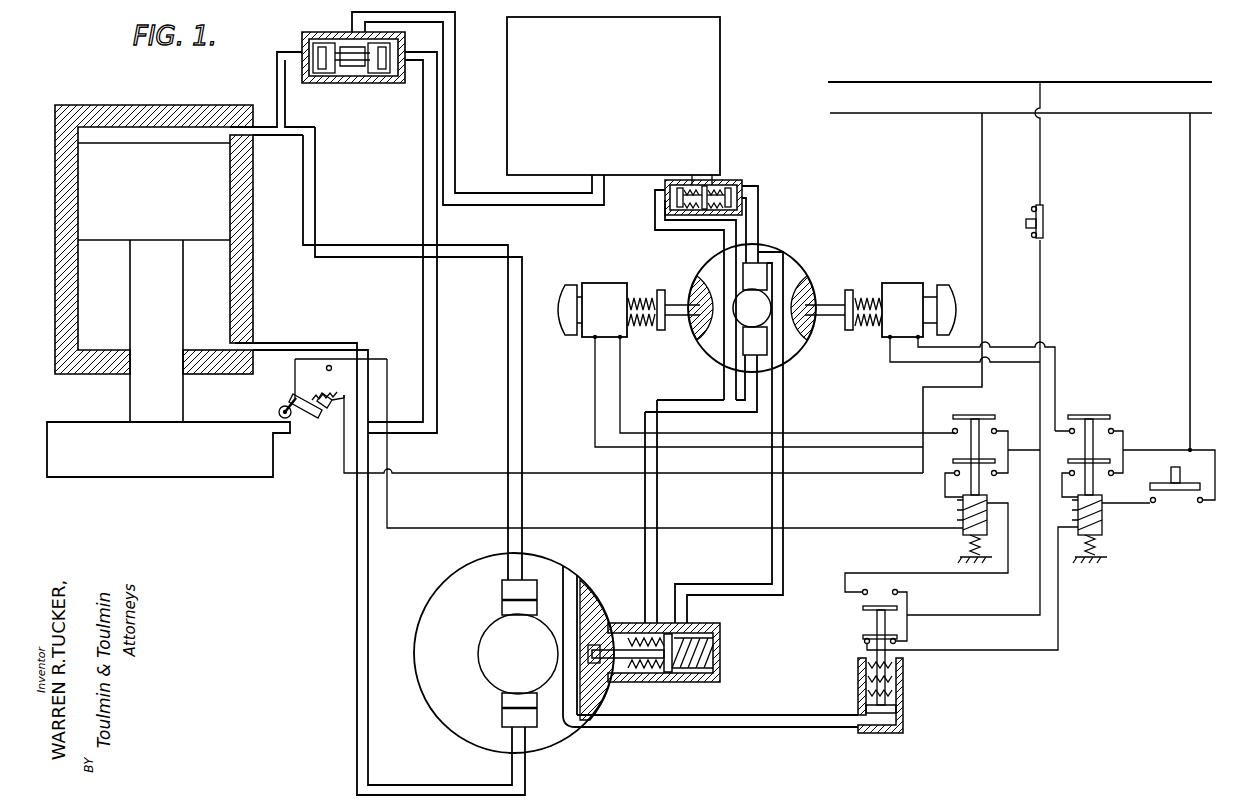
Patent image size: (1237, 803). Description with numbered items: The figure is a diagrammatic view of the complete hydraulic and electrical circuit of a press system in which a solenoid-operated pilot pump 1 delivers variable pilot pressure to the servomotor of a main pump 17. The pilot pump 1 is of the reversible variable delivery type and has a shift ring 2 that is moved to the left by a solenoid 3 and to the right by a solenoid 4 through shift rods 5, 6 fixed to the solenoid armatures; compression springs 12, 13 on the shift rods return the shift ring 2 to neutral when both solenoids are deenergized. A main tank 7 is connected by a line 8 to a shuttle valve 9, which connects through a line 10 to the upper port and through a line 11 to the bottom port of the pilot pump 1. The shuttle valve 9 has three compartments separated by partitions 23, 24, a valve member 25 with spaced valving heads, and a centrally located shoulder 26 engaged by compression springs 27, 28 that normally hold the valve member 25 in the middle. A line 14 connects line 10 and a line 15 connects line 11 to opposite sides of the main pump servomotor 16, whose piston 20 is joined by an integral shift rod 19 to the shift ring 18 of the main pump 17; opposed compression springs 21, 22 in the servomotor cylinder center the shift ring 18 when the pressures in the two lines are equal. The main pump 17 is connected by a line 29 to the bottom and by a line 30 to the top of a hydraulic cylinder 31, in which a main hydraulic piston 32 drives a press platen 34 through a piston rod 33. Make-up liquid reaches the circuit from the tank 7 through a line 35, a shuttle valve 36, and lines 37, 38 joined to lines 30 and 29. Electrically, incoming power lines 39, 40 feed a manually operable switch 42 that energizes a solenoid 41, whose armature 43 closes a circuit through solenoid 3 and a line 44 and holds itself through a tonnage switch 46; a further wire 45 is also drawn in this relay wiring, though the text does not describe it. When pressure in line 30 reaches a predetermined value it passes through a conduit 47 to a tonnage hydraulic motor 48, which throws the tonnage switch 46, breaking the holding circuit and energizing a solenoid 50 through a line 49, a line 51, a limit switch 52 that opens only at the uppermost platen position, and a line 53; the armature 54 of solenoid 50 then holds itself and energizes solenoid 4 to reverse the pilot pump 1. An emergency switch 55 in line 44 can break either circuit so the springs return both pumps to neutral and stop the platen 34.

The pilot pump 1 is at (792, 265).
The shift ring 2 is at (810, 290).
The solenoid 3 is at (894, 313).
The solenoid 4 is at (596, 313).
The shift rod 5 is at (822, 308).
The shift rod 6 is at (680, 305).
The main tank 7 is at (596, 72).
The line 8 is at (705, 180).
The shuttle valve 9 is at (742, 188).
The line 10 is at (758, 213).
The line 11 is at (724, 243).
The compression spring 12 is at (868, 296).
The compression spring 13 is at (638, 296).
The line 14 is at (788, 415).
The line 15 is at (645, 503).
The main pump servomotor 16 is at (720, 623).
The main pump 17 is at (560, 742).
The shift ring 18 is at (585, 618).
The shift rod 19 is at (606, 645).
The piston 20 is at (668, 634).
The compression spring 21 is at (720, 651).
The compression spring 22 is at (650, 682).
The partition 23 is at (680, 186).
The partition 24 is at (729, 186).
The valve member 25 is at (667, 194).
The shoulder 26 is at (702, 212).
The compression spring 27 is at (690, 186).
The compression spring 28 is at (716, 182).
The line 29 is at (357, 638).
The line 30 is at (508, 442).
The hydraulic cylinder 31 is at (253, 300).
The main hydraulic piston 32 is at (163, 218).
The piston rod 33 is at (146, 302).
The press platen 34 is at (149, 454).
The line 35 is at (455, 78).
The shuttle valve 36 is at (372, 83).
The line 37 is at (277, 80).
The line 38 is at (423, 192).
The power line 39 is at (1120, 82).
The power line 40 is at (1132, 113).
The solenoid 41 is at (1102, 530).
The manually operable switch 42 is at (1182, 503).
The armature 43 is at (1090, 415).
The line 44 is at (1052, 385).
The wire 45 is at (1035, 648).
The tonnage switch 46 is at (877, 625).
The conduit 47 is at (790, 715).
The tonnage hydraulic motor 48 is at (903, 705).
The line 49 is at (903, 573).
The solenoid 50 is at (963, 527).
The line 51 is at (702, 528).
The limit switch 52 is at (318, 420).
The line 53 is at (554, 473).
The armature 54 is at (975, 415).
The emergency switch 55 is at (1046, 222).